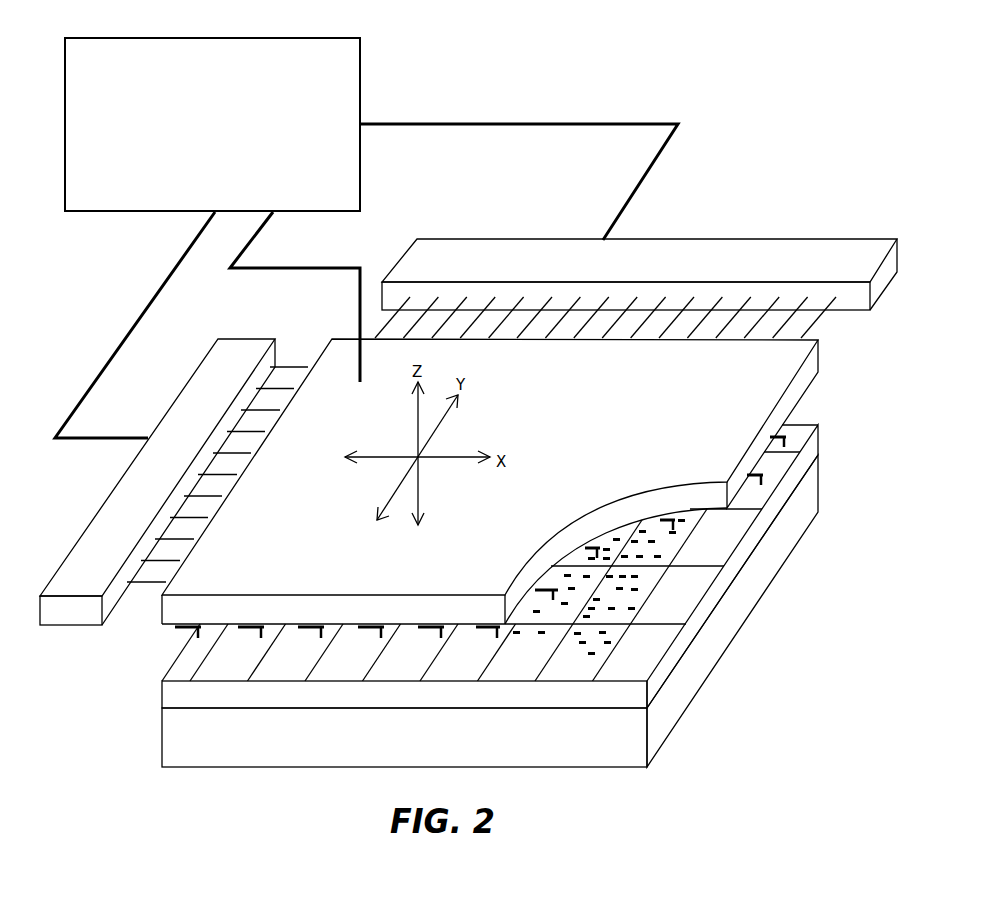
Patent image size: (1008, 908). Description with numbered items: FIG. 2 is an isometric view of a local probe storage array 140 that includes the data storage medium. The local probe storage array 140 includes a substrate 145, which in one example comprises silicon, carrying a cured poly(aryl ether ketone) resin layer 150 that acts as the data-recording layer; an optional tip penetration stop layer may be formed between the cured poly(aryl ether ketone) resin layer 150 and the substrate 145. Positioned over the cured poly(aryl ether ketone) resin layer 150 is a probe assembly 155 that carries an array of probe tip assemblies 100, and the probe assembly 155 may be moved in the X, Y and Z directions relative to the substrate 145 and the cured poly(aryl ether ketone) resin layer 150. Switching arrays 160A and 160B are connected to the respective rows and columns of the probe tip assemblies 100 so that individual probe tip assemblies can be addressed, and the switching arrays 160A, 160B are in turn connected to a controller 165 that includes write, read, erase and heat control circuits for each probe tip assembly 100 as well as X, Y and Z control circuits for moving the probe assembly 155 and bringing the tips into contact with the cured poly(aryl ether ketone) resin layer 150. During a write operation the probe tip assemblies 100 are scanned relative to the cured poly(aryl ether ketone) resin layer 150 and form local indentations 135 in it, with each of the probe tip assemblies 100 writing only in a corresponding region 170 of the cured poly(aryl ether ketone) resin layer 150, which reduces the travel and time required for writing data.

The probe tip assemblies 100 is at (547, 595).
The local indentations 135 is at (635, 594).
The local probe storage array 140 is at (765, 172).
The substrate 145 is at (500, 753).
The cured poly(aryl ether ketone) resin layer 150 is at (713, 600).
The probe assembly 155 is at (662, 427).
The switching array 160A is at (176, 490).
The switching array 160B is at (680, 276).
The controller 165 is at (333, 201).
The region 170 is at (647, 573).